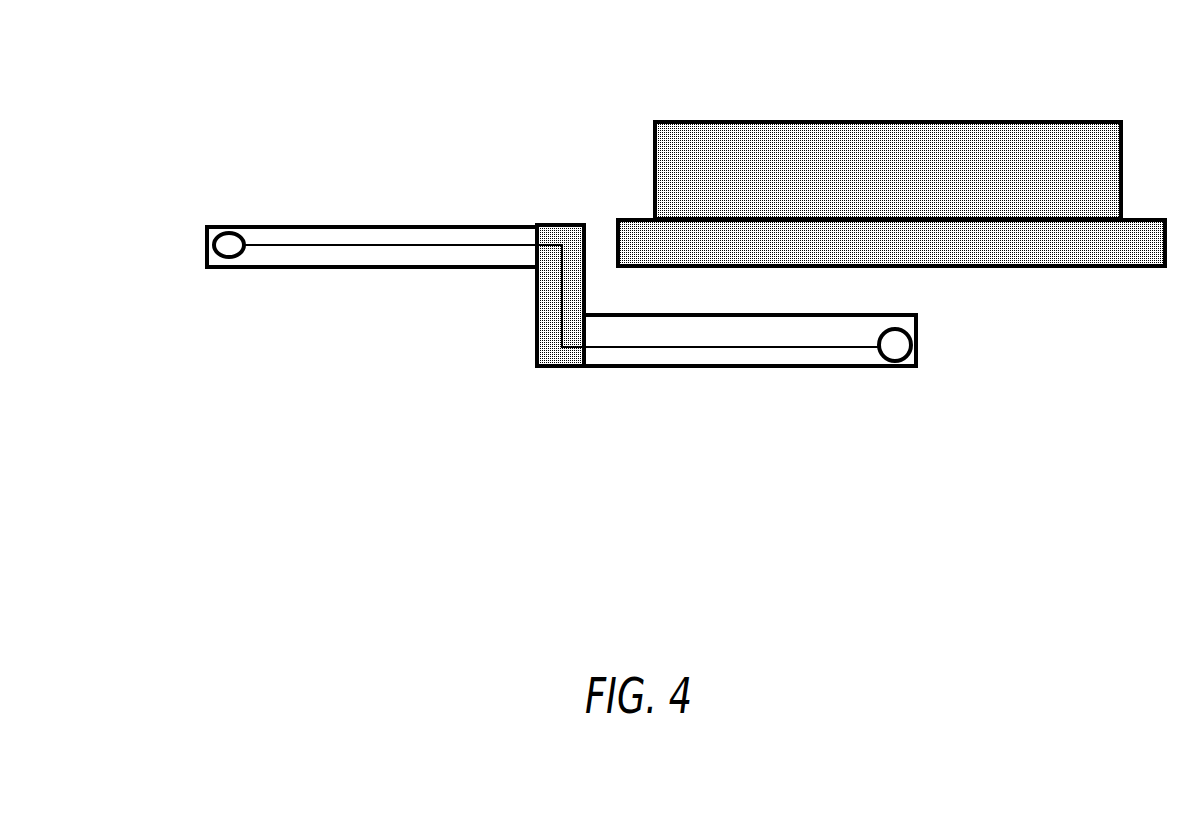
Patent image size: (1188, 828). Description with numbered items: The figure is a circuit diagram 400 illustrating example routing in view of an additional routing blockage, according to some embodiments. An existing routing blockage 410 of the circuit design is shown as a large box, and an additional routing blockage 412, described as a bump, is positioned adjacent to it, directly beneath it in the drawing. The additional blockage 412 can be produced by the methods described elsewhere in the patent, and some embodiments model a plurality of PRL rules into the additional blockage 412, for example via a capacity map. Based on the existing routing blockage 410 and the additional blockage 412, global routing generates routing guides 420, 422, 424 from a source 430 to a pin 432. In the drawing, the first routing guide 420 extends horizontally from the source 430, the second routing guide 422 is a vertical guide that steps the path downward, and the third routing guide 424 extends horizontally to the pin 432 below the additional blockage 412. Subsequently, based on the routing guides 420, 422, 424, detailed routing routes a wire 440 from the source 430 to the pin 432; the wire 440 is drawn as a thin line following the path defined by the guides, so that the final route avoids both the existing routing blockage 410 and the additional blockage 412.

The circuit diagram 400 is at (250, 75).
The existing routing blockage 410 is at (873, 121).
The additional routing blockage 412 is at (950, 268).
The routing guide 420 is at (325, 226).
The routing guide 422 is at (555, 226).
The routing guide 424 is at (748, 369).
The source 430 is at (223, 245).
The pin 432 is at (903, 347).
The wire 440 is at (447, 243).